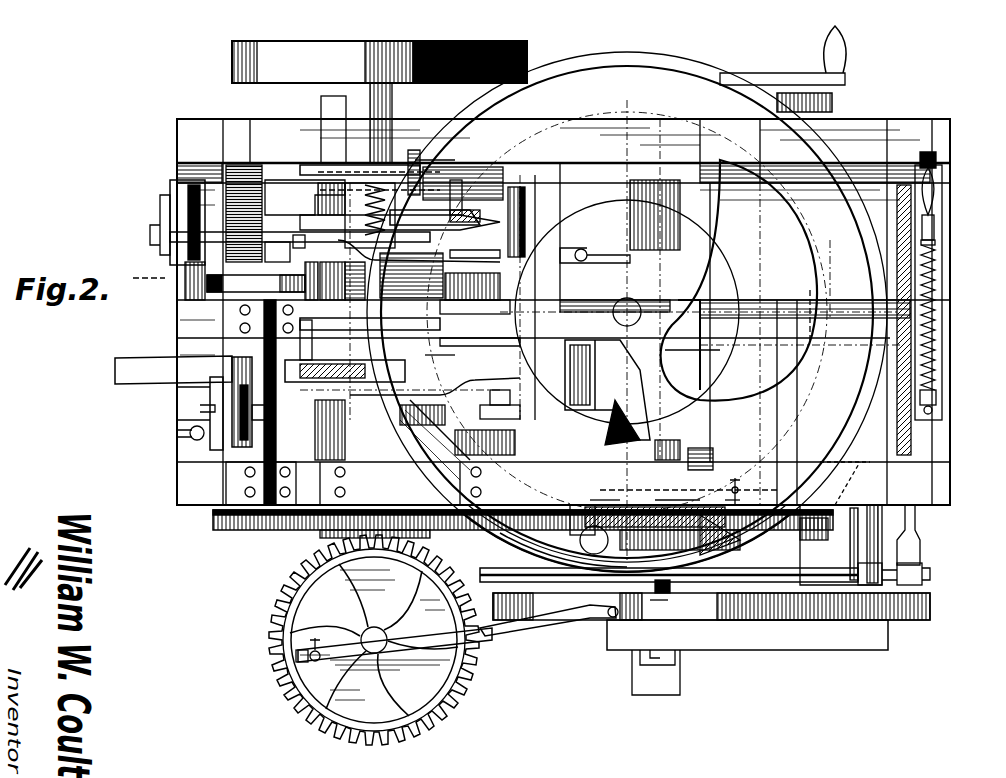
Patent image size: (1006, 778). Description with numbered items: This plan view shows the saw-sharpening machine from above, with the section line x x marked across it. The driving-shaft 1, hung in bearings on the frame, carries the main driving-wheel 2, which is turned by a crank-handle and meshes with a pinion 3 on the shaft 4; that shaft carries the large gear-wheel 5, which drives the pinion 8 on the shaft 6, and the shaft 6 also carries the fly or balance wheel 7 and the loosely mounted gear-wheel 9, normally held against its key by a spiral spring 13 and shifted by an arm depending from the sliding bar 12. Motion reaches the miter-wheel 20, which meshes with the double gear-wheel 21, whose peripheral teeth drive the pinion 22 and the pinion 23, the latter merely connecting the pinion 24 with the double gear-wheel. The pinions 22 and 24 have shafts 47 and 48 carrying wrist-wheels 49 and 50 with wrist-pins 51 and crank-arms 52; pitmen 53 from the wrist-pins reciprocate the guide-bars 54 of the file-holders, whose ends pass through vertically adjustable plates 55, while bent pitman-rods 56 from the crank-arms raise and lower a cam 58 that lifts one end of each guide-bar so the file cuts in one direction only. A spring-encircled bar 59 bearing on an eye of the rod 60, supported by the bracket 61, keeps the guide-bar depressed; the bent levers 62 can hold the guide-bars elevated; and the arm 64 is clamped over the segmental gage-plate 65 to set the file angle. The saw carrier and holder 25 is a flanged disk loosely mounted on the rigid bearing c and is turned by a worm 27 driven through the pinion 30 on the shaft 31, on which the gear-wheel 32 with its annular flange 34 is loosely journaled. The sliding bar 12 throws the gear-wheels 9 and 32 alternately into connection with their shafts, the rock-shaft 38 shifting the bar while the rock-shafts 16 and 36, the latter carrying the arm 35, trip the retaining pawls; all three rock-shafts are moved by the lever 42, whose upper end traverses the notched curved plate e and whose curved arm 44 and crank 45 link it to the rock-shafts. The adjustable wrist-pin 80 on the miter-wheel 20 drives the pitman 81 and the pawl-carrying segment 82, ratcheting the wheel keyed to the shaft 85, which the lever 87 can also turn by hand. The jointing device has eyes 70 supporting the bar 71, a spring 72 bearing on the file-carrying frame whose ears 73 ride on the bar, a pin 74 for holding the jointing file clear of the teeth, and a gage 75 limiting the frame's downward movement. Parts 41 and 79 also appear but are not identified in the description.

The driving-shaft 1 is at (692, 353).
The main driving-wheel 2 is at (834, 100).
The pinion 3 is at (565, 95).
The shaft 4 is at (534, 297).
The large gear-wheel 5 is at (656, 446).
The shaft 6 is at (392, 104).
The fly or balance wheel 7 is at (368, 52).
The pinion 8 is at (360, 450).
The gear-wheel 9 is at (845, 483).
The sliding bar 12 is at (333, 129).
The spiral spring 13 is at (421, 212).
The rock-shaft 16 is at (290, 180).
The miter-wheel 20 is at (374, 640).
The double gear-wheel 21 is at (322, 540).
The pinion 22 is at (226, 530).
The pinion 23 is at (365, 497).
The pinion 24 is at (520, 528).
The saw carrier and holder 25 is at (631, 299).
The worm 27 is at (475, 314).
The pinion 30 is at (496, 296).
The shaft 31 is at (455, 256).
The gear-wheel 32 is at (603, 528).
The annular flange 34 is at (613, 547).
The arm 35 is at (720, 535).
The rock-shaft 36 is at (806, 566).
The rock-shaft 38 is at (758, 345).
The spring seat 41 is at (937, 405).
The lever 42 is at (937, 283).
The curved arm 44 is at (920, 510).
The crank 45 is at (920, 548).
The shaft 47 is at (275, 428).
The shaft 48 is at (485, 442).
The wrist-wheel 49 is at (234, 232).
The wrist-wheel 50 is at (500, 418).
The wrist-pins 51 is at (278, 243).
The crank-arms 52 is at (278, 250).
The pitmen 53 is at (344, 281).
The guide-bars 54 is at (173, 370).
The vertically-adjustable plates 55 is at (435, 440).
The bent pitman-rods 56 is at (374, 346).
The cam 58 is at (412, 342).
The bar 59 is at (466, 212).
The rod 60 is at (422, 155).
The bracket 61 is at (362, 172).
The bent levers 62 is at (568, 252).
The arm 64 is at (305, 222).
The segmental and slotted gage-plate 65 is at (480, 337).
The eyes 70 is at (690, 490).
The bar 71 is at (722, 491).
The spring 72 is at (677, 491).
The ears 73 is at (594, 491).
The pin 74 is at (740, 483).
The gage 75 is at (688, 466).
The lever 79 is at (378, 648).
The adjustable wrist-pin 80 is at (296, 656).
The pitman 81 is at (552, 628).
The segment 82 is at (711, 606).
The shaft 85 is at (668, 598).
The lever 87 is at (747, 657).
The rigid bearing c is at (700, 330).
The curved plate e is at (945, 342).
The section line x x is at (149, 278).